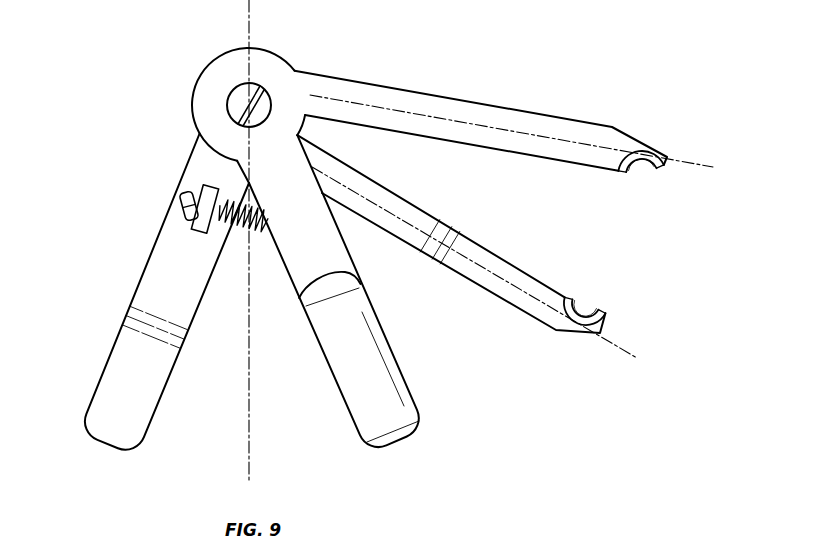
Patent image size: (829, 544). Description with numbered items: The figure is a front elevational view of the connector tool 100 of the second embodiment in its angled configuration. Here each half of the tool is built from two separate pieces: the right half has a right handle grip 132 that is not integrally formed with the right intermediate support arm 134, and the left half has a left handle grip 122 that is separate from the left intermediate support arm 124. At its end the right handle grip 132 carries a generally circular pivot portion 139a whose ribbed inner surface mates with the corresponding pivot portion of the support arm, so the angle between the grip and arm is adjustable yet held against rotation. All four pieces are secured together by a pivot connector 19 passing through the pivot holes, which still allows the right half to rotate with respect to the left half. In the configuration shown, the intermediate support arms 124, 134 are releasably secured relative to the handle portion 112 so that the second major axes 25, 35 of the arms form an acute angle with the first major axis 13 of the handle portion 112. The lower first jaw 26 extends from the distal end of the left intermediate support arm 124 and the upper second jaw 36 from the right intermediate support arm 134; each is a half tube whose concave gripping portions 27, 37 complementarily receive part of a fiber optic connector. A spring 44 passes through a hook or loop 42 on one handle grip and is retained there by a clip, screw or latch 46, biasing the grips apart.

The connector tool 100 is at (490, 58).
The first major axis 13 is at (252, 21).
The pivot portion 139a is at (270, 60).
The pivot connector 19 is at (236, 100).
The handle portion 112 is at (112, 318).
The left handle grip 122 is at (112, 362).
The right handle grip 132 is at (392, 360).
The right intermediate support arm 134 is at (523, 142).
The left intermediate support arm 124 is at (489, 255).
The second major axis 35 is at (700, 162).
The second jaw 36 is at (646, 153).
The gripping portion 37 is at (640, 170).
The second major axis 25 is at (627, 350).
The first jaw 26 is at (593, 322).
The gripping portion 27 is at (583, 311).
The hook or loop 42 is at (197, 222).
The spring 44 is at (245, 235).
The clip, screw or latch 46 is at (183, 200).